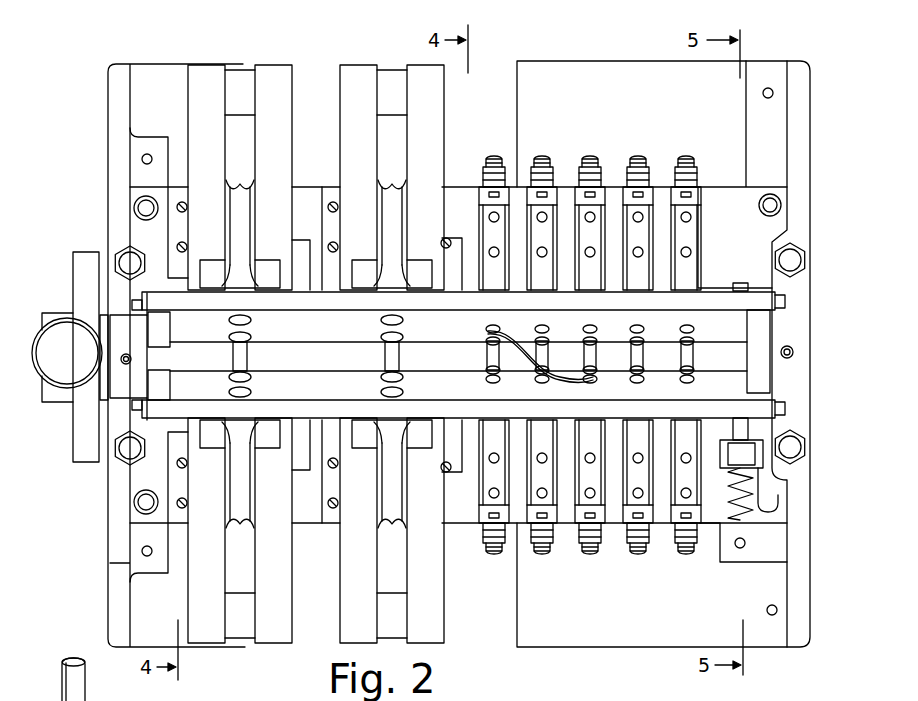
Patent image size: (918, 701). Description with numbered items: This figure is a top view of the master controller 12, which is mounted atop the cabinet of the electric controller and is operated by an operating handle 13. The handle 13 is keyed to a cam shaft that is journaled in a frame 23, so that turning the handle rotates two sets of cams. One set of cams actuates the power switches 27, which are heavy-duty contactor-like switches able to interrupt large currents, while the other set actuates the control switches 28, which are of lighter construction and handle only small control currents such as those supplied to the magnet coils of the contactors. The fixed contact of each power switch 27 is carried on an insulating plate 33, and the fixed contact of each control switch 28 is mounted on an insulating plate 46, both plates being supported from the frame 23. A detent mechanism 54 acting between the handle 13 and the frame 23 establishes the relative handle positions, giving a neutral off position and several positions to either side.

The master controller 12 is at (571, 72).
The operating handle 13 is at (62, 333).
The frame 23 is at (117, 199).
The power switches 27 is at (348, 82).
The control switches 28 is at (678, 157).
The insulating plate 33 is at (459, 398).
The insulating plate 46 is at (452, 332).
The detent mechanism 54 is at (723, 482).